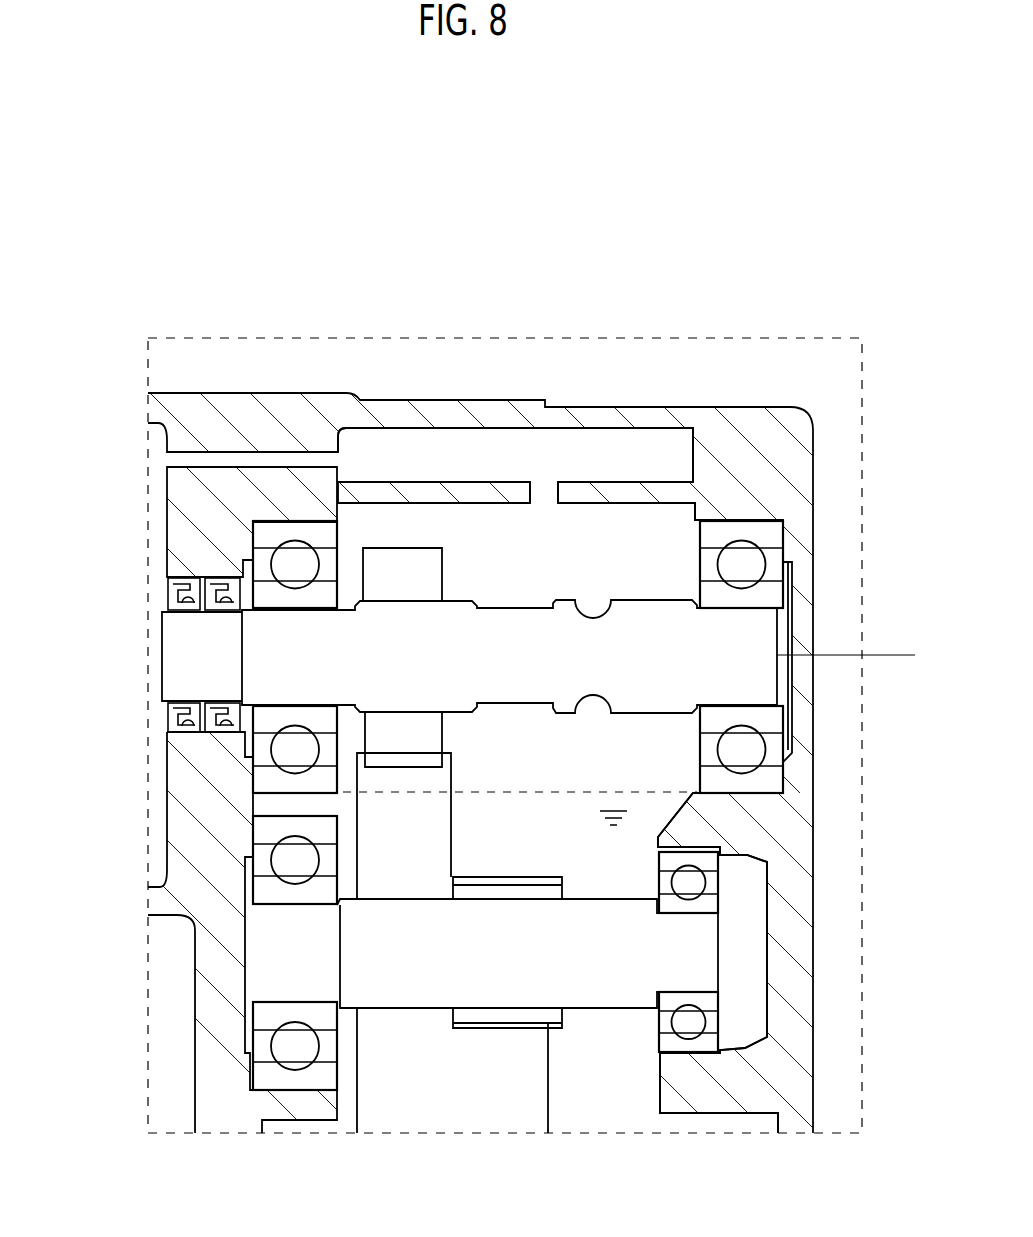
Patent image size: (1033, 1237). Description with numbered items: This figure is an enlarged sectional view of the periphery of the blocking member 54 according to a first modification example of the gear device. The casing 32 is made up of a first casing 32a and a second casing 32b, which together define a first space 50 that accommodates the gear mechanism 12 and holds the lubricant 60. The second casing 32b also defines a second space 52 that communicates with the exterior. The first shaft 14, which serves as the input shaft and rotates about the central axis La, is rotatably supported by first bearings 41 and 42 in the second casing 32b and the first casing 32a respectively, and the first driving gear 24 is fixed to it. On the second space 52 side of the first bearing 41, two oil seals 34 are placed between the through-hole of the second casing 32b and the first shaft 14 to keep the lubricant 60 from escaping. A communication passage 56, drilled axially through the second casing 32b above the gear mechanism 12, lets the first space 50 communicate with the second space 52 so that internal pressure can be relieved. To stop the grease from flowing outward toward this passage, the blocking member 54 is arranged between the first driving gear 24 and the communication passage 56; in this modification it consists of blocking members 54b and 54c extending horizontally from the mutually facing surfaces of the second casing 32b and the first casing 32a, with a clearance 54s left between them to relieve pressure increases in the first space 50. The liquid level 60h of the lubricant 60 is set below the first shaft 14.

The gear mechanism 12 is at (677, 460).
The first shaft 14 is at (645, 620).
The first driving gear 24 is at (427, 730).
The casing 32 is at (570, 400).
The first casing 32a is at (807, 703).
The second casing 32b is at (183, 806).
The oil seal 34 is at (168, 592).
The first bearing 41 is at (293, 593).
The first bearing 42 is at (767, 533).
The first space 50 is at (637, 518).
The second space 52 is at (158, 505).
The blocking member 54 is at (435, 476).
The blocking member 54b is at (497, 490).
The blocking member 54c is at (602, 490).
The clearance 54s is at (545, 498).
The communication passage 56 is at (240, 457).
The lubricant 60 is at (647, 815).
The liquid level 60h is at (618, 786).
The central axis La is at (900, 655).